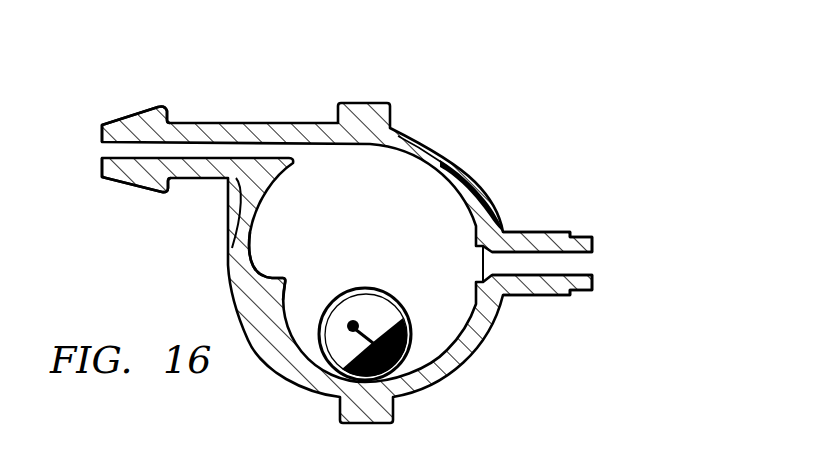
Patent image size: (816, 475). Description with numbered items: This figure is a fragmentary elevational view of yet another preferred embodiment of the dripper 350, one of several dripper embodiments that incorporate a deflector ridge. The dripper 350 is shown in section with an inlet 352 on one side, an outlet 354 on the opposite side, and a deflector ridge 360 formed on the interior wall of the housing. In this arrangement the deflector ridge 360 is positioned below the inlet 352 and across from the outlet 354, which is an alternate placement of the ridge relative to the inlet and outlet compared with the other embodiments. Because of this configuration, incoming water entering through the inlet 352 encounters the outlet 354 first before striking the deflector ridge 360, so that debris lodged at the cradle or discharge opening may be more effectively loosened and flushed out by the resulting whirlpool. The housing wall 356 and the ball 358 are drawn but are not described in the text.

The dripper 350 is at (438, 54).
The inlet 352 is at (142, 102).
The outlet 354 is at (545, 231).
The spherical housing wall 356 is at (437, 146).
The ball 358 is at (388, 289).
The deflector ridge 360 is at (278, 276).